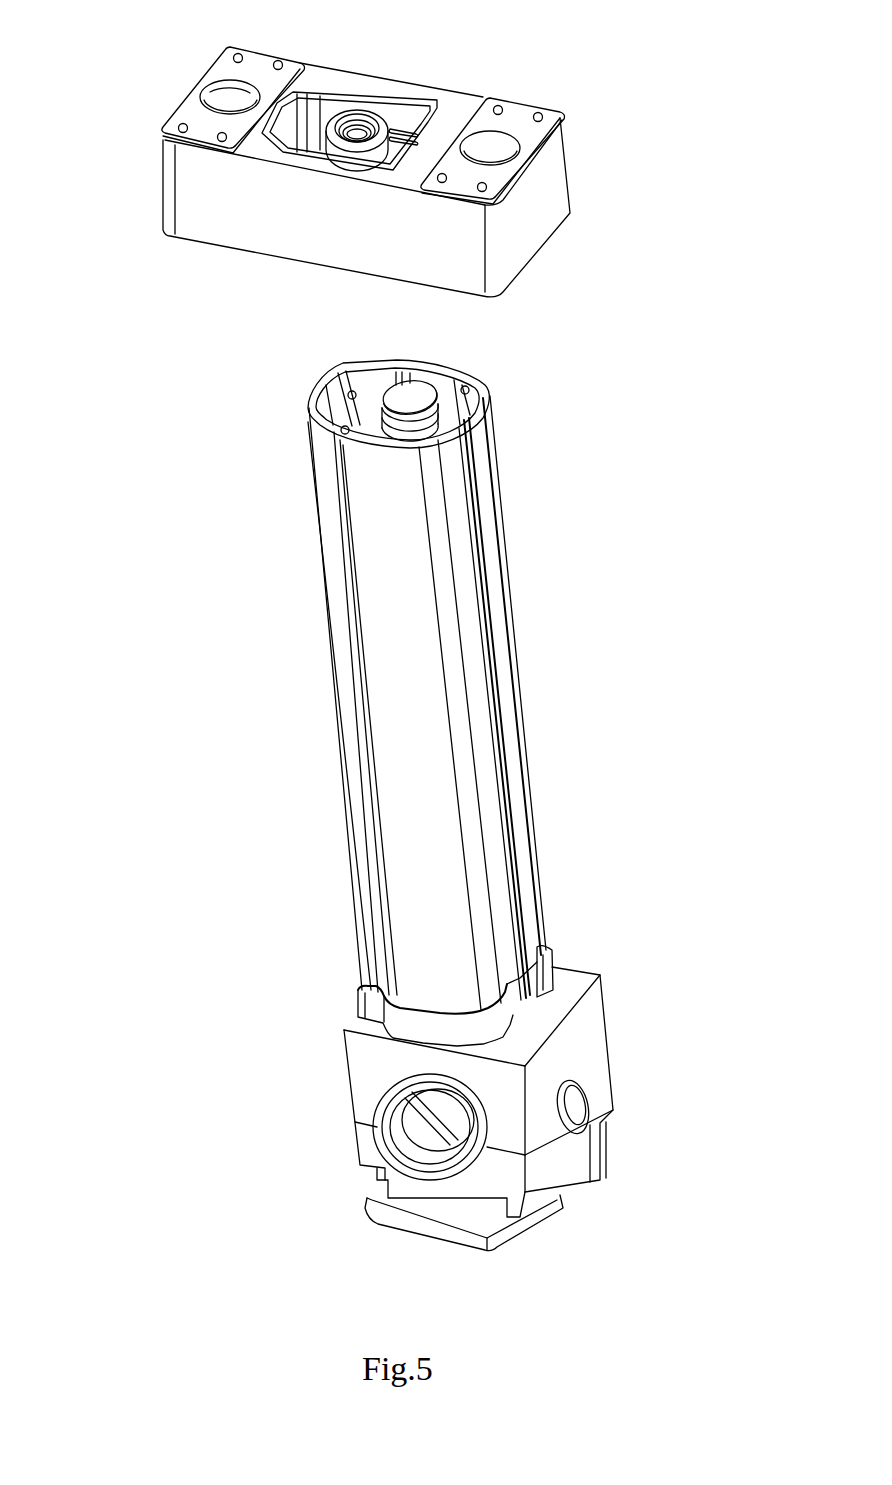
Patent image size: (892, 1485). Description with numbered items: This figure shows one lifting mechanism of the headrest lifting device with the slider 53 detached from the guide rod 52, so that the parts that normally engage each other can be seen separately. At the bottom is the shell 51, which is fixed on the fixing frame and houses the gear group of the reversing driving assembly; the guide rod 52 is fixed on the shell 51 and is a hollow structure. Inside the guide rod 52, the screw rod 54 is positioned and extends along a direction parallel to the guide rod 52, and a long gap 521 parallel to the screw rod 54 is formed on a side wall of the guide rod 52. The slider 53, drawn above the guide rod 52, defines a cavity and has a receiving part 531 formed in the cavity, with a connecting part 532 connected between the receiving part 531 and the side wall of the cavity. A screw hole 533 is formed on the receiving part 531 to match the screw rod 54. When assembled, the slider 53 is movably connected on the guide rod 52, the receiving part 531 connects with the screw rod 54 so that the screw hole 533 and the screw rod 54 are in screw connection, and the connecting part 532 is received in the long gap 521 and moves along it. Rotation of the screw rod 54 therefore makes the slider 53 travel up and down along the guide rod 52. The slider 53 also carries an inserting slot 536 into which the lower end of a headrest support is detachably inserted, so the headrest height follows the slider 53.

The shell 51 is at (367, 1087).
The guide rod 52 is at (403, 669).
The long gap 521 is at (473, 423).
The slider 53 is at (377, 152).
The receiving part 531 is at (317, 151).
The connecting part 532 is at (415, 140).
The screw hole 533 is at (360, 113).
The inserting slot 536 is at (493, 153).
The screw rod 54 is at (410, 398).